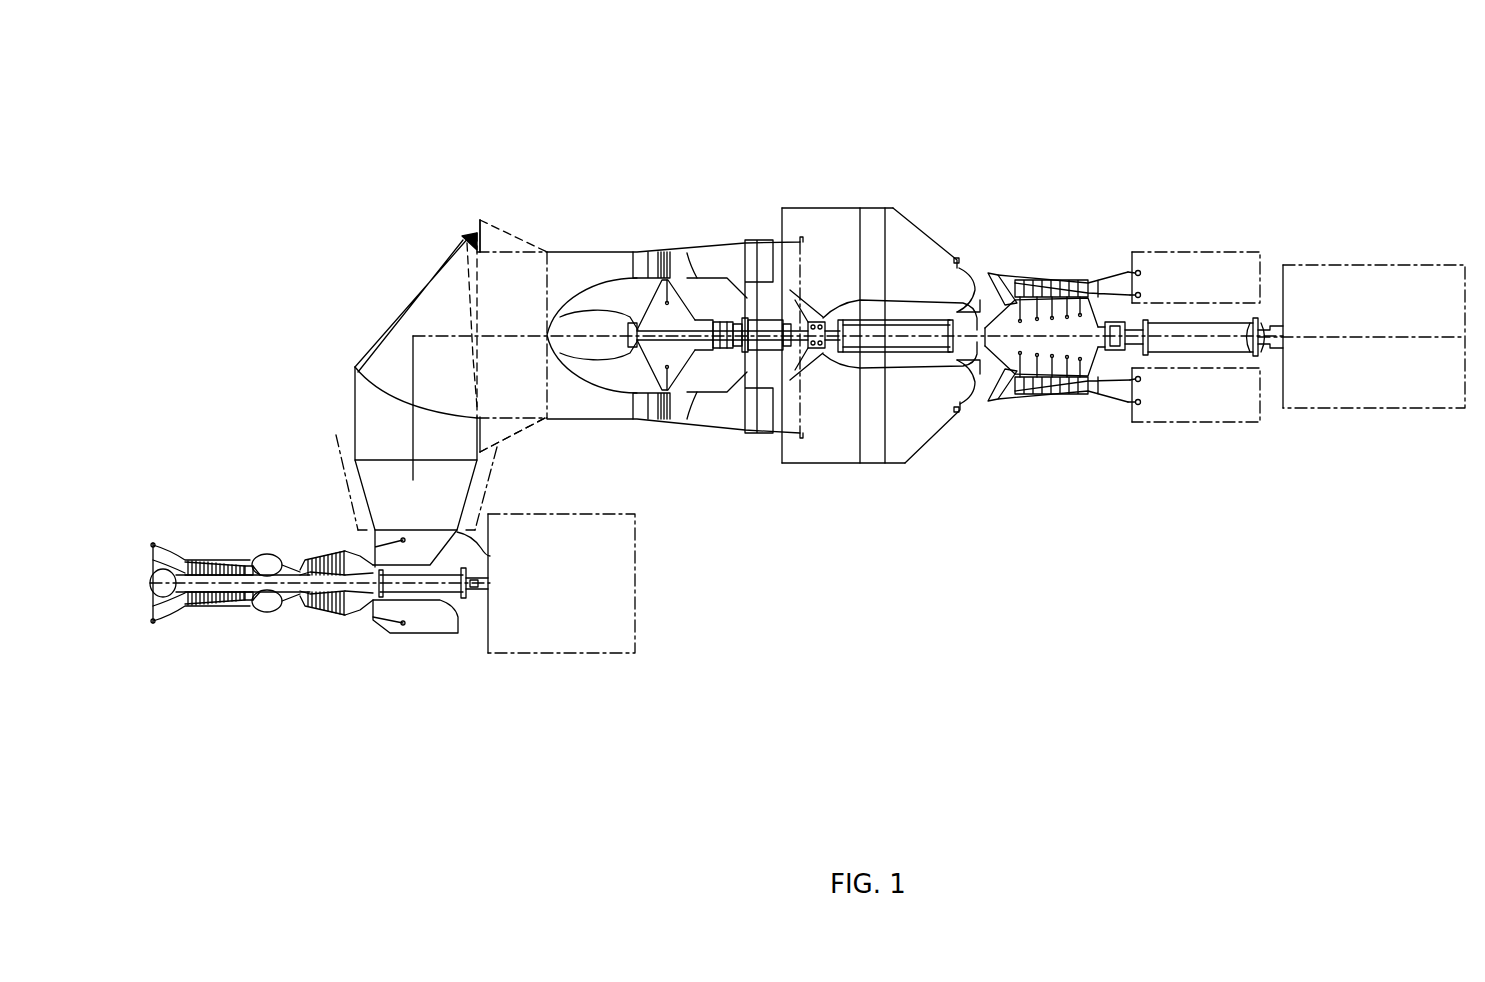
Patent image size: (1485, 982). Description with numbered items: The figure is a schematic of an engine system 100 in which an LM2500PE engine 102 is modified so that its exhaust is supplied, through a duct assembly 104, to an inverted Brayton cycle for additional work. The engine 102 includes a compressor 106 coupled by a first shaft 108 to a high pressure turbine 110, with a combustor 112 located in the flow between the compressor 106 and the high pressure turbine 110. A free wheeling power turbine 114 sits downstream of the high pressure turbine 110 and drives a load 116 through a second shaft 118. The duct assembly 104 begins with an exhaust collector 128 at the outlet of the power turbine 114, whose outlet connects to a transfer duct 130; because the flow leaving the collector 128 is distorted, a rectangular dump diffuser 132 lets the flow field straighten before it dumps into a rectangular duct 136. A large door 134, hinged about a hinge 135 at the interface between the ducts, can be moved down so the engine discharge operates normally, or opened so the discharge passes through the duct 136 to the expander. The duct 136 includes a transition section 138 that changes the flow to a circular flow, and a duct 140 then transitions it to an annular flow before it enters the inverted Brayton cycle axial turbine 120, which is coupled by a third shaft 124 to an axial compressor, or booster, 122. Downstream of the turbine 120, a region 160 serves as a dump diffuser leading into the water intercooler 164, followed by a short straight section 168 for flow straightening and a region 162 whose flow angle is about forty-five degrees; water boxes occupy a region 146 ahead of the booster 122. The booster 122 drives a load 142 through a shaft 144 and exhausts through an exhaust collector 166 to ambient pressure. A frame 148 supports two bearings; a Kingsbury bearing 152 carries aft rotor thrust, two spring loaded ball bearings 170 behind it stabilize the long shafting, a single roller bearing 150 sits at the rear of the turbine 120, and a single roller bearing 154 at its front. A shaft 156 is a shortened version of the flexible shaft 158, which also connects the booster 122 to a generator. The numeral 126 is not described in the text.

The engine system 100 is at (1208, 102).
The LM2500PE engine 102 is at (229, 525).
The duct assembly 104 is at (336, 386).
The compressor 106 is at (203, 630).
The first shaft 108 is at (233, 612).
The high pressure turbine 110 is at (296, 636).
The combustor 112 is at (280, 532).
The free wheeling power turbine 114 is at (322, 528).
The load 116 is at (570, 655).
The second shaft 118 is at (455, 598).
The inverted Brayton cycle axial turbine 120 is at (663, 217).
The axial compressor (booster) 122 is at (1065, 250).
The third shaft 124 is at (902, 352).
The casing 126 is at (845, 192).
The exhaust collector 128 is at (490, 556).
The transfer duct 130 is at (373, 421).
The rectangular dump diffuser 132 is at (490, 480).
The door 134 is at (418, 315).
The hinge 135 is at (460, 237).
The rectangular duct 136 is at (490, 292).
The transition section 138 is at (518, 435).
The duct 140 is at (603, 250).
The load 142 is at (1403, 410).
The shaft 144 is at (1259, 356).
The region 146 is at (966, 290).
The frame 148 is at (747, 407).
The single roller bearing 150 is at (686, 253).
The Kingsbury bearing 152 is at (703, 420).
The single roller bearing 154 is at (558, 313).
The shaft 156 is at (795, 290).
The flexible shaft 158 is at (1189, 365).
The region (dump diffuser) 160 is at (825, 225).
The region 162 is at (898, 233).
The heat exchanger (intercooler) 164 is at (872, 220).
The exhaust collector 166 is at (1202, 252).
The straight section 168 is at (907, 202).
The ball bearings 170 is at (883, 300).